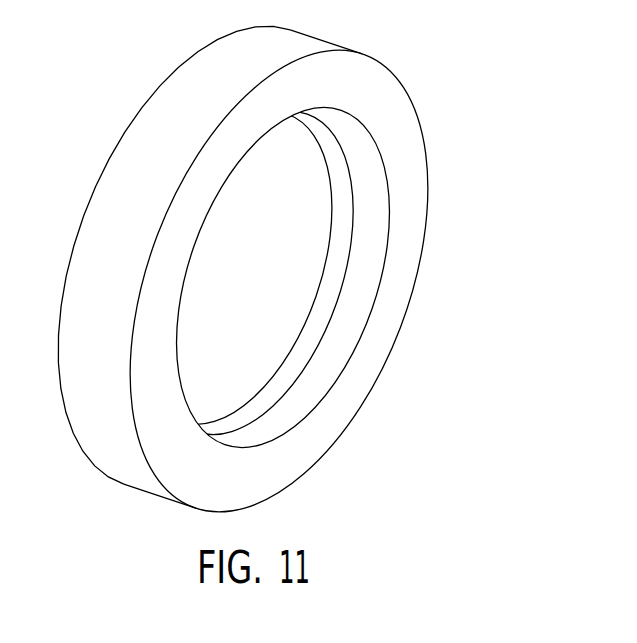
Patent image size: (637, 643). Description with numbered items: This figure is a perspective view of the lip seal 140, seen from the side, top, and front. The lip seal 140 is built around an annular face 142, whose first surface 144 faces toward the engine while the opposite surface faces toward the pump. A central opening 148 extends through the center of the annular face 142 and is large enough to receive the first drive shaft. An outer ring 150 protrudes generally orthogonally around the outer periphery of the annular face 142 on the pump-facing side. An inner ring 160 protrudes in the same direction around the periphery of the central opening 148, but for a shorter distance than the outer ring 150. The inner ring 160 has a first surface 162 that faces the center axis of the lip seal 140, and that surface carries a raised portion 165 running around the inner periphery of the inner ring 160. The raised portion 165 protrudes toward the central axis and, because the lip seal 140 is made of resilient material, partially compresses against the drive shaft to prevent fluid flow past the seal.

The lip seal 140 is at (452, 104).
The annular face 142 is at (403, 278).
The first surface 144 is at (410, 233).
The central opening 148 is at (328, 367).
The outer ring 150 is at (157, 110).
The inner ring 160 is at (297, 402).
The first surface 162 is at (352, 313).
The raised portion 165 is at (293, 357).